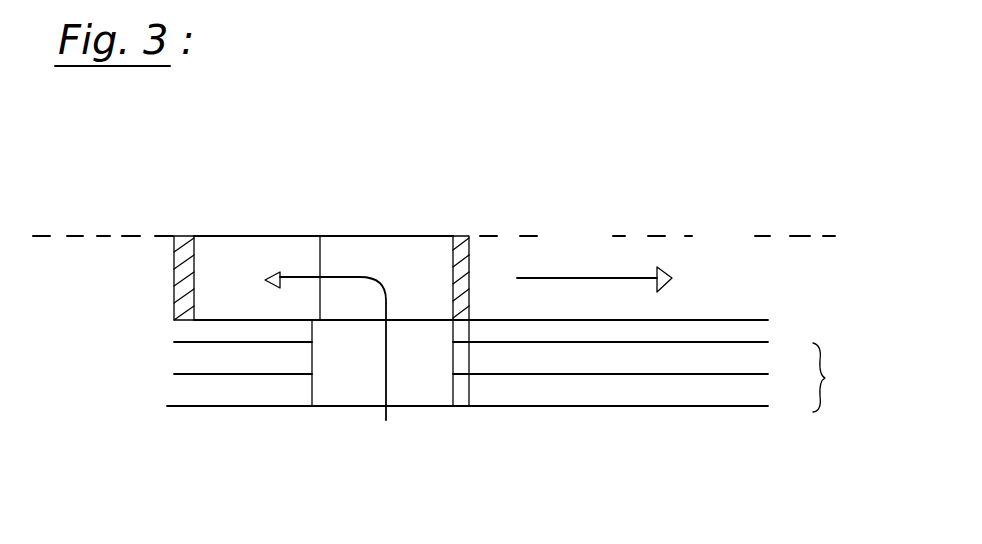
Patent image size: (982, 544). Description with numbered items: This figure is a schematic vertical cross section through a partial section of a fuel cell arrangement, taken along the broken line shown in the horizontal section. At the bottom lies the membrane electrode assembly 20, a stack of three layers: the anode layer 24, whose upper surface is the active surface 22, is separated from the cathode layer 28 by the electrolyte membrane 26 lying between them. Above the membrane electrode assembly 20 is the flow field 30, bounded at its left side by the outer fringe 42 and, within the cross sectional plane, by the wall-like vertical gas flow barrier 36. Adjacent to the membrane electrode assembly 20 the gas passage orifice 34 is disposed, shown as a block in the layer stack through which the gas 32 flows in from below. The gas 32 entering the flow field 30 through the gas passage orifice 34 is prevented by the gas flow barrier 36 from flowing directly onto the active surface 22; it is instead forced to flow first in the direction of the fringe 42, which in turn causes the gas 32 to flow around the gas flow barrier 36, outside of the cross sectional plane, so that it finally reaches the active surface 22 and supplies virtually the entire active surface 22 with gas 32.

The membrane electrode assembly 20 is at (844, 377).
The active surface 22 is at (680, 320).
The anode layer 24 is at (753, 333).
The electrolyte membrane 26 is at (727, 367).
The cathode layer 28 is at (702, 398).
The flow field 30 is at (745, 256).
The gas 32 is at (538, 278).
The gas passage orifice 34 is at (430, 358).
The gas flow barrier 36 is at (453, 264).
The outer fringe 42 is at (174, 256).